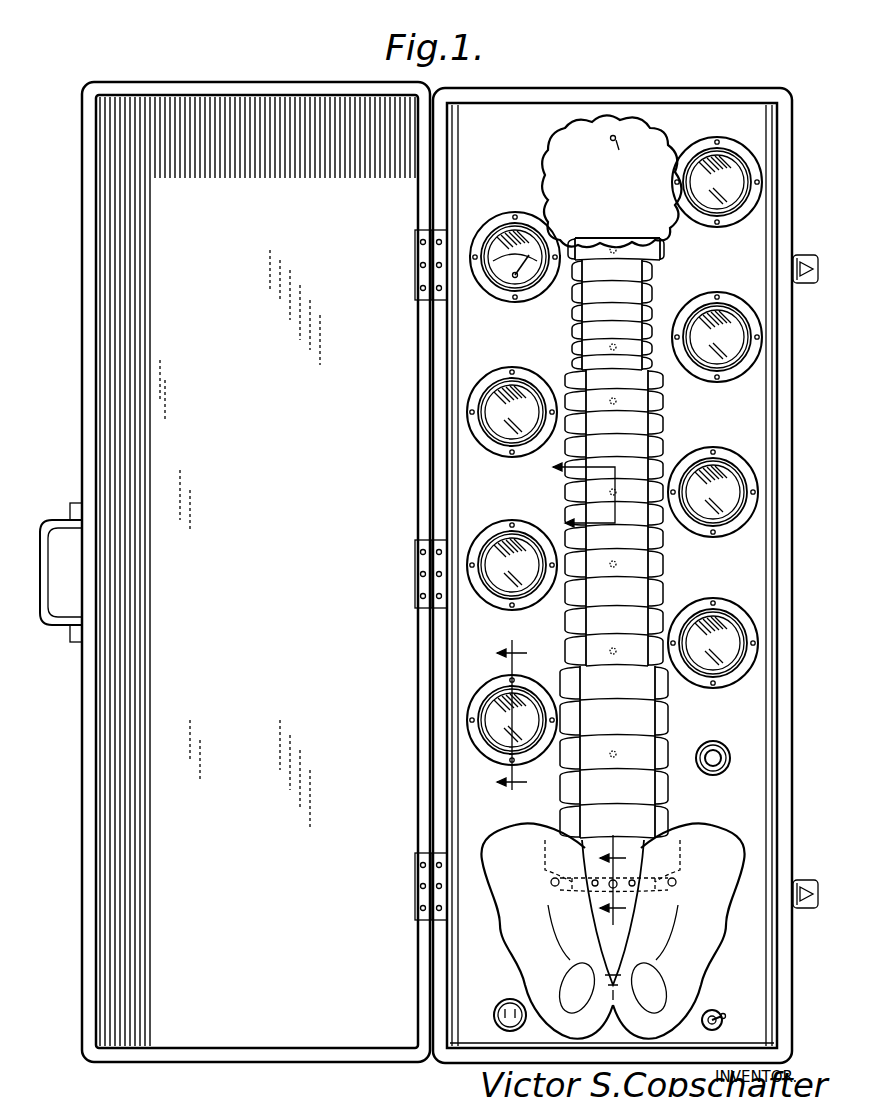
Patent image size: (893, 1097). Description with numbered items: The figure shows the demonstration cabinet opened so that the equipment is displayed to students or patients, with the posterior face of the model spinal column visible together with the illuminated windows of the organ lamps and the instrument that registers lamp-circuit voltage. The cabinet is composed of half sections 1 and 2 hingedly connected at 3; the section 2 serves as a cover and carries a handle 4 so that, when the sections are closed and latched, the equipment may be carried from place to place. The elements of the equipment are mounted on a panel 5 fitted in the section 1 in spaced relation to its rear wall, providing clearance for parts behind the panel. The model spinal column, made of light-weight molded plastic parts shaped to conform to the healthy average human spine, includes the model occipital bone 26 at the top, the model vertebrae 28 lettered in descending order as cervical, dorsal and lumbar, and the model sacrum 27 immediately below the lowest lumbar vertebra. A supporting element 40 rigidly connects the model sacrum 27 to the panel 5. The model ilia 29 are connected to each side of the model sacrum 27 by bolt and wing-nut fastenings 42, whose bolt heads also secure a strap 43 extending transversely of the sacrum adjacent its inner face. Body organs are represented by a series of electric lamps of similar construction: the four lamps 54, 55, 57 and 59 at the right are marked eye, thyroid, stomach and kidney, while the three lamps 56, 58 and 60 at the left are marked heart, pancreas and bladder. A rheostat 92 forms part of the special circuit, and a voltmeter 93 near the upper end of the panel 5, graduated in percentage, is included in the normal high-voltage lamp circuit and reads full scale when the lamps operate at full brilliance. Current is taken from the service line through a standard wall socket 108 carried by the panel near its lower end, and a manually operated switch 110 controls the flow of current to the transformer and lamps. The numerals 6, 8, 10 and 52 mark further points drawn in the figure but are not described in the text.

The half section 1 is at (782, 583).
The half section 2 is at (256, 572).
The hinge connection 3 is at (422, 567).
The handle 4 is at (58, 518).
The panel 5 is at (755, 557).
The electrode contact points 6 is at (574, 492).
The electrode contact points on sacrum 8 is at (624, 883).
The electrode contact points on bladder meter 10 is at (511, 718).
The model occipital bone 26 is at (611, 476).
The model sacrum 27 is at (613, 920).
The model vertebrae 28 is at (584, 272).
The model ilia 29 is at (618, 961).
The supporting element 40 is at (650, 885).
The bolt and wing-nut fastenings 42 is at (690, 890).
The strap 43 is at (565, 890).
The brain representation 52 is at (611, 181).
The eye lamp 54 is at (722, 203).
The thyroid lamp 55 is at (724, 358).
The heart lamp 56 is at (520, 390).
The stomach lamp 57 is at (710, 515).
The pancreas lamp 58 is at (518, 544).
The kidney lamp 59 is at (708, 665).
The bladder lamp 60 is at (530, 697).
The rheostat 92 is at (715, 772).
The voltmeter 93 is at (522, 238).
The wall socket 108 is at (506, 1000).
The switch 110 is at (727, 998).